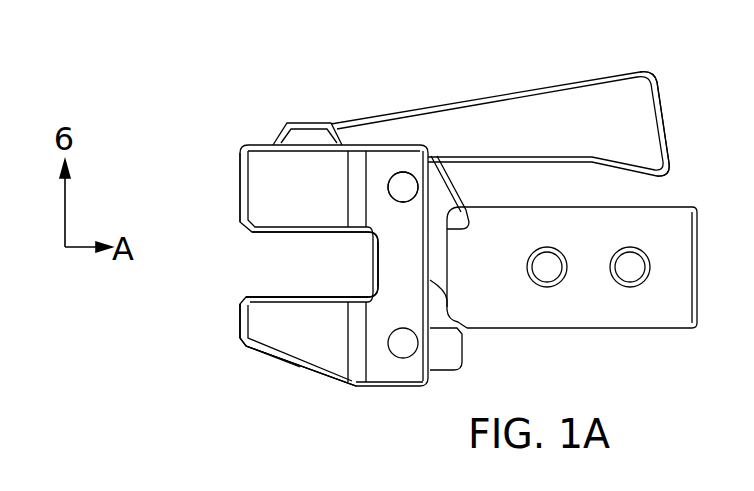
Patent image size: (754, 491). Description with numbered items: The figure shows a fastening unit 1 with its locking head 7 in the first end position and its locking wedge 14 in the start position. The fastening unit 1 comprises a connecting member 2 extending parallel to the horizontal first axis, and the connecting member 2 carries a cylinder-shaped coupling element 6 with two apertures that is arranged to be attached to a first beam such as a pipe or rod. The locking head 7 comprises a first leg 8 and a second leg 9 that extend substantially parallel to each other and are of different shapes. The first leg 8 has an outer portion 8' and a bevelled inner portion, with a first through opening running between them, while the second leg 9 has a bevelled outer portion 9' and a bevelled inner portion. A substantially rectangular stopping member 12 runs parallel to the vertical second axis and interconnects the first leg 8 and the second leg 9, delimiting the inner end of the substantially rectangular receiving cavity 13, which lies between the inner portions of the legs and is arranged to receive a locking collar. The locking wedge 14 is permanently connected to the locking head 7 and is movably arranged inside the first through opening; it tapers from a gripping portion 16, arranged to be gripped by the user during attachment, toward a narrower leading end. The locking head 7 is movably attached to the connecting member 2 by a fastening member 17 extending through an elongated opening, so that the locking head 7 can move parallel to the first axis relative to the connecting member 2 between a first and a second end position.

The fastening unit 1 is at (435, 236).
The connecting member 2 is at (462, 277).
The coupling element 6 is at (590, 288).
The locking head 7 is at (306, 370).
The first leg 8 is at (302, 265).
The outer portion of first leg 8' is at (307, 85).
The second leg 9 is at (251, 341).
The outer portion of second leg 9' is at (254, 378).
The stopping member 12 is at (390, 290).
The receiving cavity 13 is at (358, 278).
The locking wedge 14 is at (528, 127).
The gripping portion 16 is at (637, 107).
The fastening member 17 is at (402, 188).